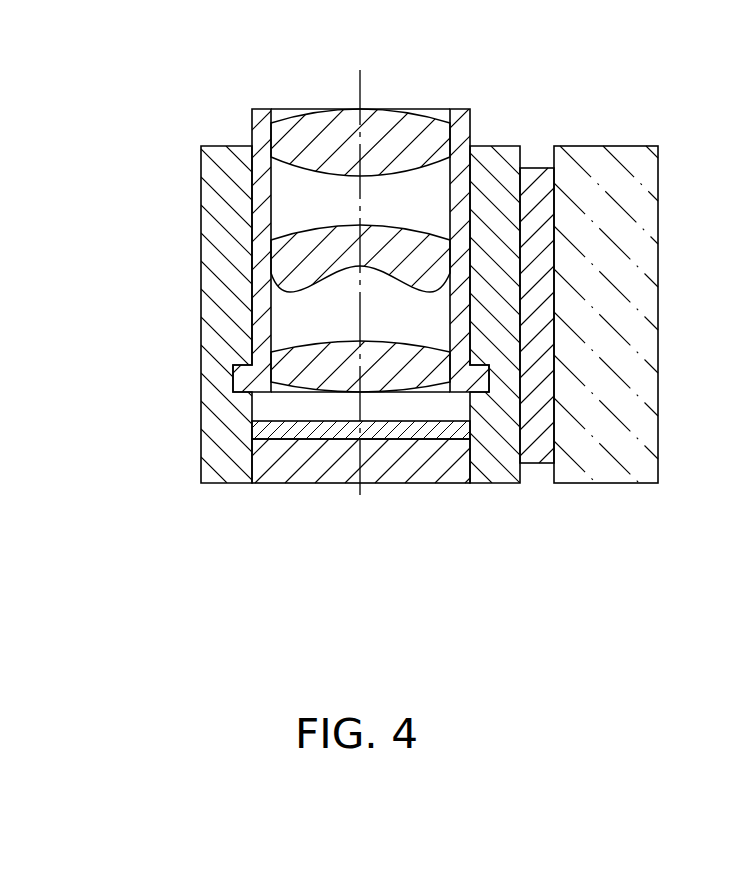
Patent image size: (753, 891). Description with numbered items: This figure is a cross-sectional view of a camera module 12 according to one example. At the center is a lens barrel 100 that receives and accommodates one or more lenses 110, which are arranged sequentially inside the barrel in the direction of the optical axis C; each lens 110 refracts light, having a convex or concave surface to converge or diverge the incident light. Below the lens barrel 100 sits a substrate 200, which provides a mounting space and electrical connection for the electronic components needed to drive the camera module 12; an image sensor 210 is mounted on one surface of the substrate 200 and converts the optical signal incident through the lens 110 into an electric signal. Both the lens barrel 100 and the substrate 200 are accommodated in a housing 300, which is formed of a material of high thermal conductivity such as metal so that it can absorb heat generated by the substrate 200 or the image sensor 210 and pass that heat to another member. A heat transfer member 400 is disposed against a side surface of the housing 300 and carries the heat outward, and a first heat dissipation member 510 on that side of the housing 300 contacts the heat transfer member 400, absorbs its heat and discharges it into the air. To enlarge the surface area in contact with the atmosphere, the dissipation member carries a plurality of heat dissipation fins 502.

The camera module 12 is at (150, 103).
The lens barrel 100 is at (258, 117).
The lens 110 is at (413, 127).
The optical axis C is at (358, 88).
The housing 300 is at (208, 278).
The image sensor 210 is at (274, 430).
The substrate 200 is at (262, 466).
The heat transfer member 400 is at (539, 185).
The first heat dissipation member 510 is at (573, 165).
The heat dissipation fins 502 is at (646, 154).